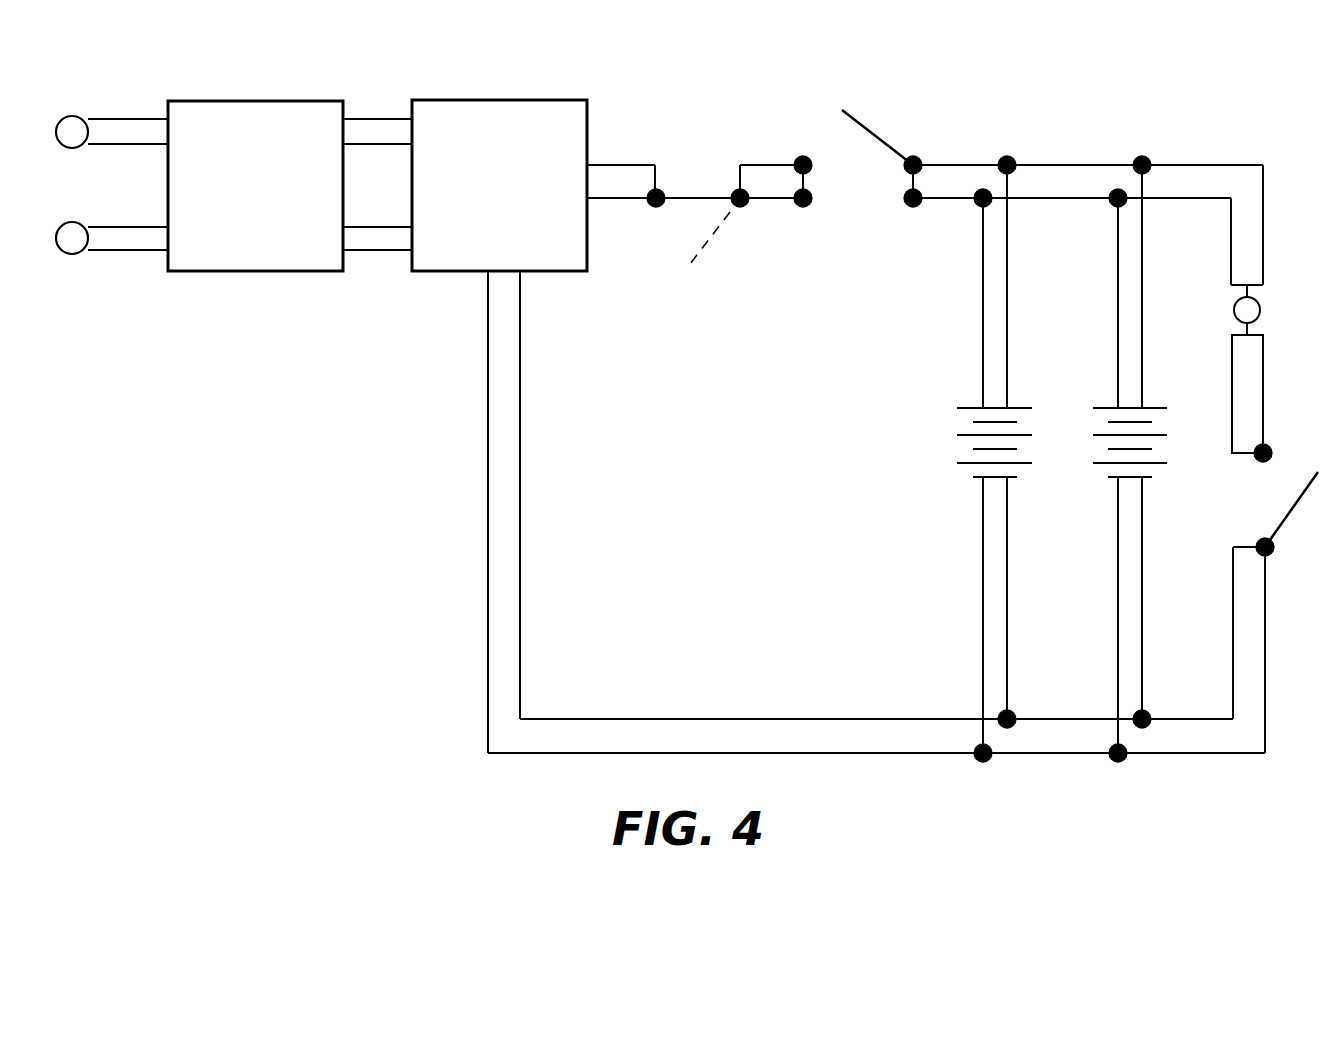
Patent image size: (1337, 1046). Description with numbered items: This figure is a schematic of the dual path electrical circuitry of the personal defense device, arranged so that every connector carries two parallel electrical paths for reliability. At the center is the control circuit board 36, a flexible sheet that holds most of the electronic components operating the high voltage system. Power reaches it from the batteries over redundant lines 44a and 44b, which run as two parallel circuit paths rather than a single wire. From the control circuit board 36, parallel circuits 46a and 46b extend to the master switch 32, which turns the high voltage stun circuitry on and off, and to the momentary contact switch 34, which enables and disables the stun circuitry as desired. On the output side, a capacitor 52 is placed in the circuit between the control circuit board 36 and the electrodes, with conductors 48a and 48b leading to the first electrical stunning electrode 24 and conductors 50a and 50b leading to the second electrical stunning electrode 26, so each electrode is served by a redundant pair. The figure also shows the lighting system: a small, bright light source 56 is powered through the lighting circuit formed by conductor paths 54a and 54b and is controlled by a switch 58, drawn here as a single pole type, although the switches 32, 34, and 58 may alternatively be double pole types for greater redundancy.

The electrical stunning electrode 24 is at (72, 118).
The electrical stunning electrode 26 is at (72, 254).
The master switch 32 is at (875, 131).
The momentary contact switch 34 is at (695, 197).
The control circuit board 36 is at (463, 100).
The battery circuit line 44a is at (488, 460).
The battery circuit line 44b is at (520, 460).
The switch circuit line 46a is at (615, 199).
The switch circuit line 46b is at (772, 165).
The electrode conductor 48a is at (127, 118).
The electrode conductor 48b is at (107, 146).
The electrode conductor 50a is at (122, 252).
The electrode conductor 50b is at (158, 226).
The capacitor 52 is at (218, 100).
The lighting circuit conductor path 54a is at (1162, 199).
The lighting circuit conductor path 54b is at (1195, 165).
The light source 56 is at (1235, 307).
The light switch 58 is at (1288, 512).